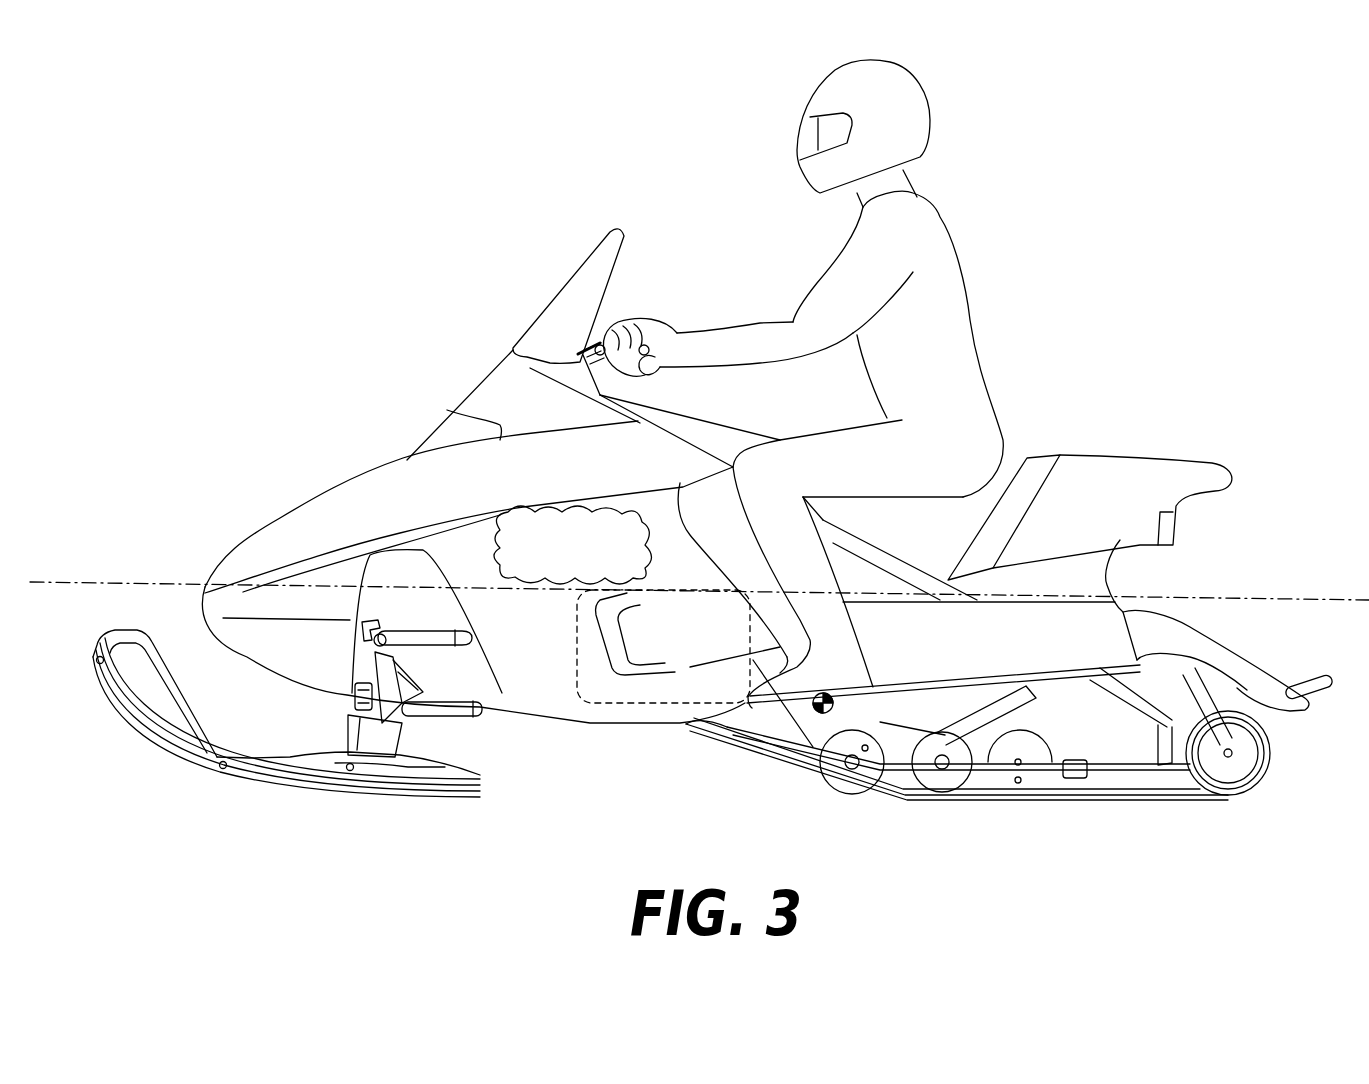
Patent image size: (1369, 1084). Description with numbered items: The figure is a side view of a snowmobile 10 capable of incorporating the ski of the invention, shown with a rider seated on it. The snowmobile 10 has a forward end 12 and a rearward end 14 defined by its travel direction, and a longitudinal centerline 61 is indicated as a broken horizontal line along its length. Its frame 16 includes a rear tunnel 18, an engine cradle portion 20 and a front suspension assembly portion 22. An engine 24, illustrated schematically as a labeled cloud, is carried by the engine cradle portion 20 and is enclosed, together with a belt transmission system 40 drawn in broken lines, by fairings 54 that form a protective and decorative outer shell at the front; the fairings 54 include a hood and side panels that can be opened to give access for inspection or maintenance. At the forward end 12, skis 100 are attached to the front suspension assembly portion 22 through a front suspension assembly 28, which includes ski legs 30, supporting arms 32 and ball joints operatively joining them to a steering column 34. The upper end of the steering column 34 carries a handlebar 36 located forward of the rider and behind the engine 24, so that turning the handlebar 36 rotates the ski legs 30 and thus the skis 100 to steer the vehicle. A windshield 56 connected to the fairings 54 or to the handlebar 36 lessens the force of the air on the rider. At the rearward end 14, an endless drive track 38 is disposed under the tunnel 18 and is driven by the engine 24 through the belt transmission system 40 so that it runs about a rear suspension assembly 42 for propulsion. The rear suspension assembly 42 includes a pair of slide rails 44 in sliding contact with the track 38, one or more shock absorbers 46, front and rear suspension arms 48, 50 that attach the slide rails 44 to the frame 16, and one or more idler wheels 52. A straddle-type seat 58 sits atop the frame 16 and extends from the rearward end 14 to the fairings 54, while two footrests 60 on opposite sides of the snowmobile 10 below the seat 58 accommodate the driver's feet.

The snowmobile 10 is at (425, 380).
The forward end 12 is at (475, 536).
The rearward end 14 is at (1033, 484).
The frame 16 is at (1132, 585).
The rear tunnel 18 is at (1000, 658).
The engine cradle portion 20 is at (598, 722).
The front suspension assembly portion 22 is at (384, 701).
The engine 24 is at (530, 515).
The front suspension assembly 28 is at (490, 723).
The ski legs 30 is at (397, 755).
The supporting arms 32 is at (463, 718).
The steering column 34 is at (552, 365).
The handlebar 36 is at (600, 345).
The endless drive track 38 is at (780, 782).
The belt transmission system 40 is at (633, 708).
The rear suspension assembly 42 is at (975, 778).
The slide rails 44 is at (1095, 778).
The shock absorbers 46 is at (1025, 700).
The front suspension arm 48 is at (870, 770).
The rear suspension arm 50 is at (1145, 770).
The idler wheels 52 is at (1262, 768).
The fairings 54 is at (283, 515).
The windshield 56 is at (590, 252).
The straddle-type seat 58 is at (1035, 465).
The footrests 60 is at (820, 714).
The longitudinal centerline 61 is at (108, 582).
The skis 100 is at (312, 798).